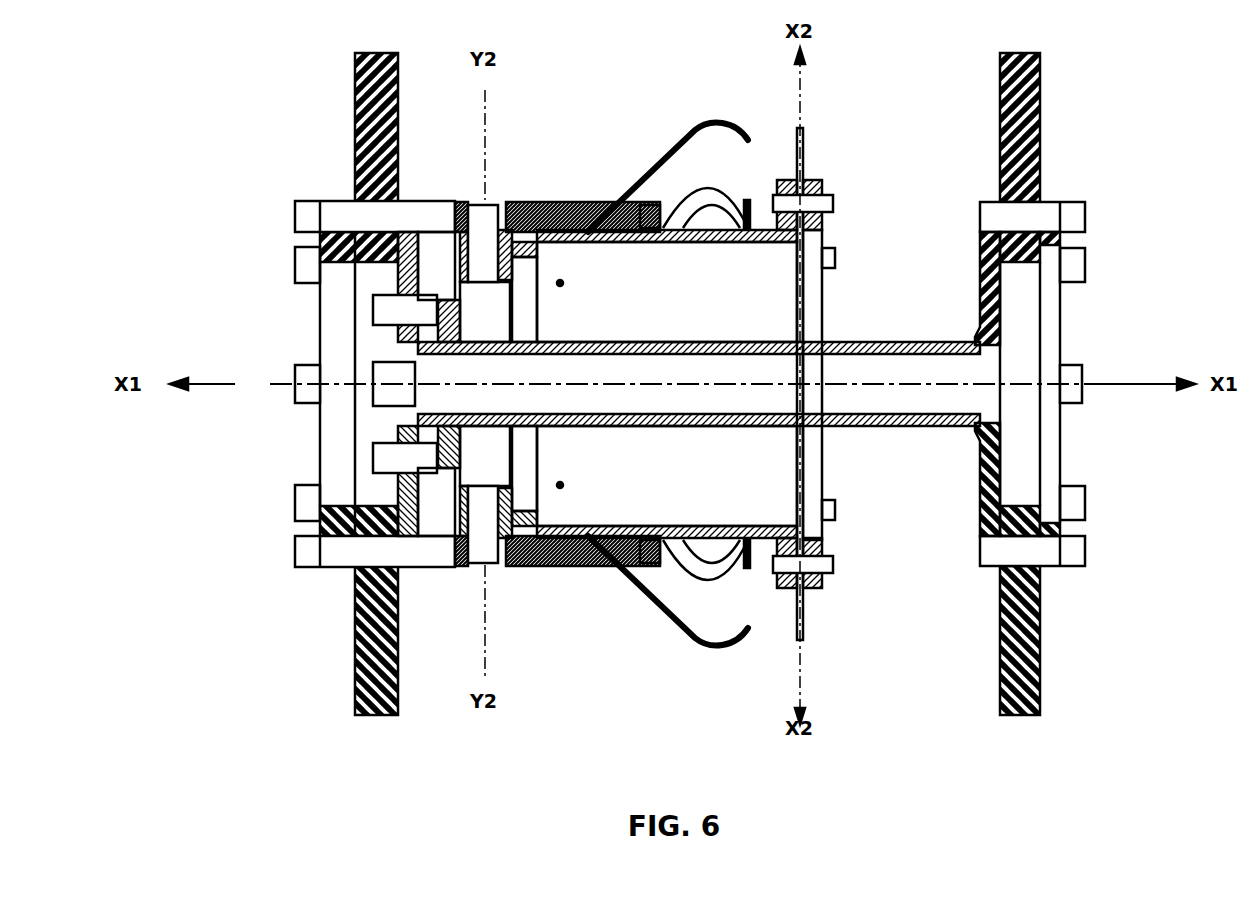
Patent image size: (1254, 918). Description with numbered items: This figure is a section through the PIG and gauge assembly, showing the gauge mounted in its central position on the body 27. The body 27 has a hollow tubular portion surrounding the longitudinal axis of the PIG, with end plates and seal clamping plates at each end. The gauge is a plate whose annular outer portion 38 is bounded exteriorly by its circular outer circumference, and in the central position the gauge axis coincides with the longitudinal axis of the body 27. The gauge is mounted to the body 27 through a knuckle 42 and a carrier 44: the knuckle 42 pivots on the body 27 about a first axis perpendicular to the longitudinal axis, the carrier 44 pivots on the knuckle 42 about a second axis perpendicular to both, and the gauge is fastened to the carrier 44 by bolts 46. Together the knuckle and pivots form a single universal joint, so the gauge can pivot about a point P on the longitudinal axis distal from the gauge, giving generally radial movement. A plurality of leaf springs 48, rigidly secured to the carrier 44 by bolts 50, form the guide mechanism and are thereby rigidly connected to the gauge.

The body 27 is at (922, 340).
The annular outer portion 38 is at (808, 162).
The knuckle 42 is at (543, 461).
The carrier 44 is at (700, 526).
The bolts 46 is at (838, 565).
The leaf springs 48 is at (703, 115).
The bolts 50 is at (563, 200).
The point P is at (480, 568).